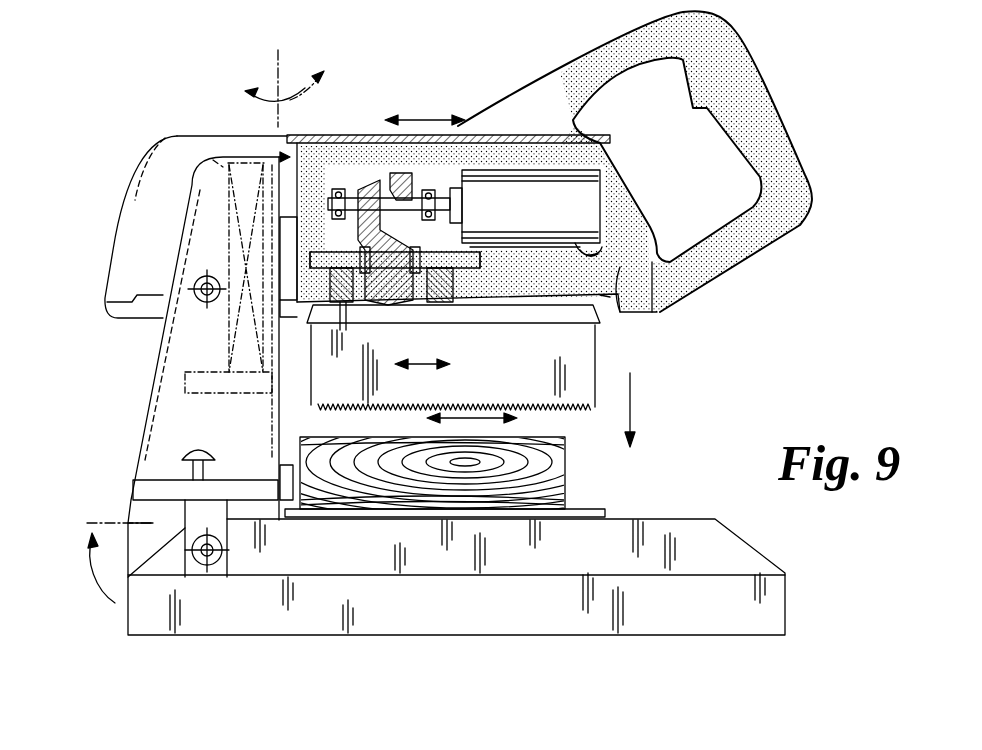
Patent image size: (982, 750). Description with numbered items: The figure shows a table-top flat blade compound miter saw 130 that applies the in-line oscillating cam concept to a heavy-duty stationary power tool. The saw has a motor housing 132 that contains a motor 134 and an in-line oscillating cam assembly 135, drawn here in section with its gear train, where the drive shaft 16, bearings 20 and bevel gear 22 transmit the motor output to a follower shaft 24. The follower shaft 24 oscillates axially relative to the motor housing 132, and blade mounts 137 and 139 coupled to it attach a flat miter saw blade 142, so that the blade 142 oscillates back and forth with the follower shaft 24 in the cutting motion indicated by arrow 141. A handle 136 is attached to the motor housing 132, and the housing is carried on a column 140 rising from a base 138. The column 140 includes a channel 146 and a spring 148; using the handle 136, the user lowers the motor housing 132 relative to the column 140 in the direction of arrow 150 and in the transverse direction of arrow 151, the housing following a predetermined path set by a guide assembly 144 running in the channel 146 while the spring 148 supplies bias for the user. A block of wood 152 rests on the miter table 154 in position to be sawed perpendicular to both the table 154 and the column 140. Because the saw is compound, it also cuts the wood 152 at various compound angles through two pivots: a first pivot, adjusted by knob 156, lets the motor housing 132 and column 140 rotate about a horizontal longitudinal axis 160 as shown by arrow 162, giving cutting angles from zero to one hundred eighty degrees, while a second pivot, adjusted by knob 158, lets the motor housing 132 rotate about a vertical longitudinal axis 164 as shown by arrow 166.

The compound miter saw 130 is at (197, 53).
The drive shaft 16 is at (327, 203).
The bearings 20 is at (375, 182).
The bevel gear 22 is at (410, 177).
The follower shaft 24 is at (462, 270).
The motor housing 132 is at (343, 135).
The motor 134 is at (492, 185).
The in-line oscillating cam assembly 135 is at (408, 155).
The handle 136 is at (790, 112).
The blade mount 137 is at (330, 280).
The base 138 is at (765, 555).
The blade mount 139 is at (610, 297).
The column 140 is at (143, 437).
The arrow 141 is at (452, 363).
The flat miter saw blade 142 is at (597, 342).
The guide assembly 144 is at (213, 160).
The channel 146 is at (283, 157).
The spring 148 is at (165, 138).
The arrow 150 is at (632, 422).
The arrow 151 is at (463, 415).
The block of wood 152 is at (565, 482).
The miter table 154 is at (605, 513).
The knob 156 is at (213, 565).
The knob 158 is at (190, 250).
The horizontal longitudinal axis 160 is at (103, 520).
The arrow 162 is at (115, 560).
The vertical longitudinal axis 164 is at (318, 68).
The arrow 166 is at (267, 97).